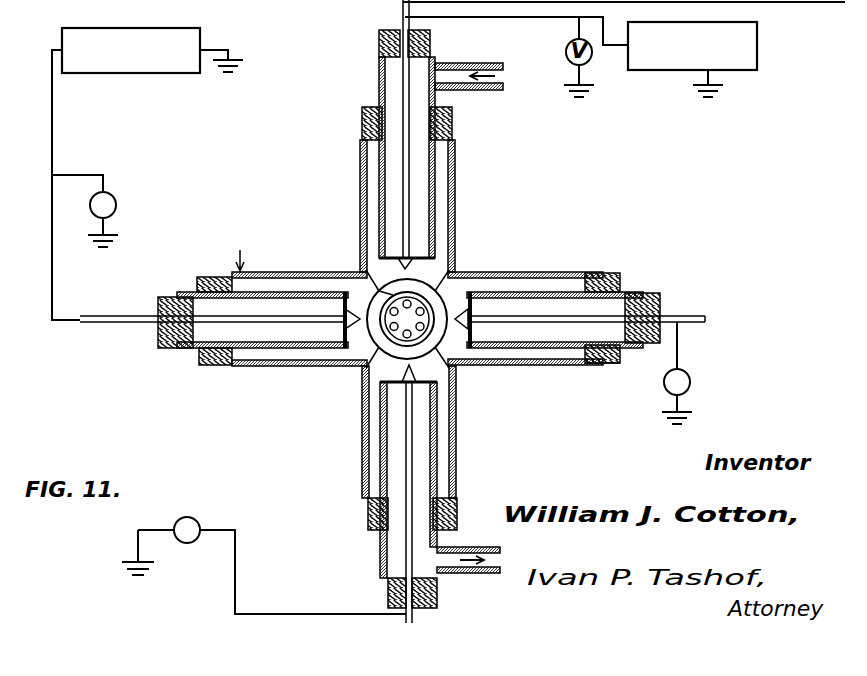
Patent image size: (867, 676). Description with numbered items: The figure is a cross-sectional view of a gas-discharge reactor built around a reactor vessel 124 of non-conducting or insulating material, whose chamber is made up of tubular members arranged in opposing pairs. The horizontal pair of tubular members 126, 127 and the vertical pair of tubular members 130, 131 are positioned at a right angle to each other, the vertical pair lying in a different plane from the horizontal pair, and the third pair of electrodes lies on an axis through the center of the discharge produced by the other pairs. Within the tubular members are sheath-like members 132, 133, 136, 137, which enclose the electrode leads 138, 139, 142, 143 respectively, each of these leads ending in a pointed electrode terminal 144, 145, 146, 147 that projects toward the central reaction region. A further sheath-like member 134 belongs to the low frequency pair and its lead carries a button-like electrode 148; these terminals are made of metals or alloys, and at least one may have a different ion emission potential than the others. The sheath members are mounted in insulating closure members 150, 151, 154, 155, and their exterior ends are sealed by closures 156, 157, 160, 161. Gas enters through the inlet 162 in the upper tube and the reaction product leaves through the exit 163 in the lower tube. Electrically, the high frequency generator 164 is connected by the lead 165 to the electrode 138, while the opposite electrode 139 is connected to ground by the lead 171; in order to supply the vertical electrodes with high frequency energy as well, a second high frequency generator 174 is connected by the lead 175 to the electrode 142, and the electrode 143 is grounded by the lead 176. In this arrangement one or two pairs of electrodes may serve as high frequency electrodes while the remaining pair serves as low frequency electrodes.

The reactor vessel 124 is at (251, 245).
The tubular member 126 is at (268, 365).
The tubular member 127 is at (548, 272).
The tubular member 130 is at (360, 173).
The tubular member 131 is at (362, 455).
The sheath-like member 132 is at (250, 350).
The sheath-like member 133 is at (570, 292).
The sheath-like member 134 is at (367, 270).
The sheath-like member 136 is at (436, 160).
The sheath-like member 137 is at (438, 406).
The electrode lead 138 is at (127, 316).
The electrode lead 139 is at (690, 313).
The electrode lead 142 is at (404, 72).
The electrode lead 143 is at (412, 459).
The pointed electrode terminal 144 is at (345, 325).
The pointed electrode terminal 145 is at (470, 328).
The pointed electrode terminal 146 is at (412, 266).
The pointed electrode terminal 147 is at (415, 368).
The button-like electrode 148 is at (366, 370).
The insulating closure member 150 is at (198, 365).
The insulating closure member 151 is at (616, 362).
The insulating closure member 154 is at (366, 114).
The insulating closure member 155 is at (368, 520).
The closure 156 is at (160, 335).
The closure 157 is at (655, 338).
The closure 160 is at (430, 33).
The closure 161 is at (388, 597).
The inlet 162 is at (503, 77).
The exit 163 is at (456, 573).
The high frequency generator 164 is at (180, 18).
The lead 165 is at (52, 130).
The lead 171 is at (688, 332).
The second high frequency generator 174 is at (655, 72).
The lead 175 is at (530, 17).
The lead 176 is at (222, 528).